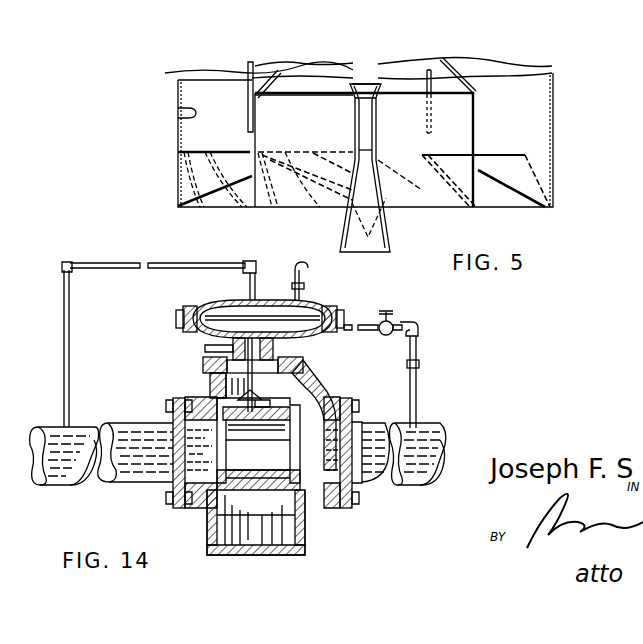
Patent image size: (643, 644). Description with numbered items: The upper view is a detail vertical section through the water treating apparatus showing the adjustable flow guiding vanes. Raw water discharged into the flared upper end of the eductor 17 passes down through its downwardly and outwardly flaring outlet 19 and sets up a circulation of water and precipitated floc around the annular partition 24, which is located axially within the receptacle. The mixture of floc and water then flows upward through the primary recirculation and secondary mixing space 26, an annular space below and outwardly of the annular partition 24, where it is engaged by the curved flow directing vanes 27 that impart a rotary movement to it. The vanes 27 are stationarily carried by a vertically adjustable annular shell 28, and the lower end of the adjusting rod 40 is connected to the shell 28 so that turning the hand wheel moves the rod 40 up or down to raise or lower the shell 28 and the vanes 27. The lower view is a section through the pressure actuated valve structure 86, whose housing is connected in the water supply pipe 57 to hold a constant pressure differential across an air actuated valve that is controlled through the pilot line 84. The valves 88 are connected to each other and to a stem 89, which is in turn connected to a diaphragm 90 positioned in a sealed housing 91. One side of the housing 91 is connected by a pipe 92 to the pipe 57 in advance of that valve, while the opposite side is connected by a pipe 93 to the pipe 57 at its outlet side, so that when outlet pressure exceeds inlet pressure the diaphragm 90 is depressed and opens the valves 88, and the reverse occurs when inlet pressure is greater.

In FIG. 5, the eductor 17 is at (344, 125).
In FIG. 5, the downwardly and outwardly flaring outlet 19 is at (378, 172).
In FIG. 5, the annular partition 24 is at (473, 121).
In FIG. 5, the primary recirculation and secondary mixing space 26 is at (178, 118).
In FIG. 5, the flow directing vanes 27 is at (195, 190).
In FIG. 5, the annular shell 28 is at (553, 123).
In FIG. 5, the adjusting rod 40 is at (255, 70).
In FIG. 14, the water supply pipe 57 is at (140, 425).
In FIG. 14, the pilot line 84 is at (203, 268).
In FIG. 14, the pressure actuated valve structure 86 is at (322, 386).
In FIG. 14, the valves 88 is at (305, 466).
In FIG. 14, the stem 89 is at (207, 372).
In FIG. 14, the diaphragm 90 is at (306, 308).
In FIG. 14, the sealed housing 91 is at (195, 304).
In FIG. 14, the pipe 92 is at (418, 353).
In FIG. 14, the pipe 93 is at (100, 263).